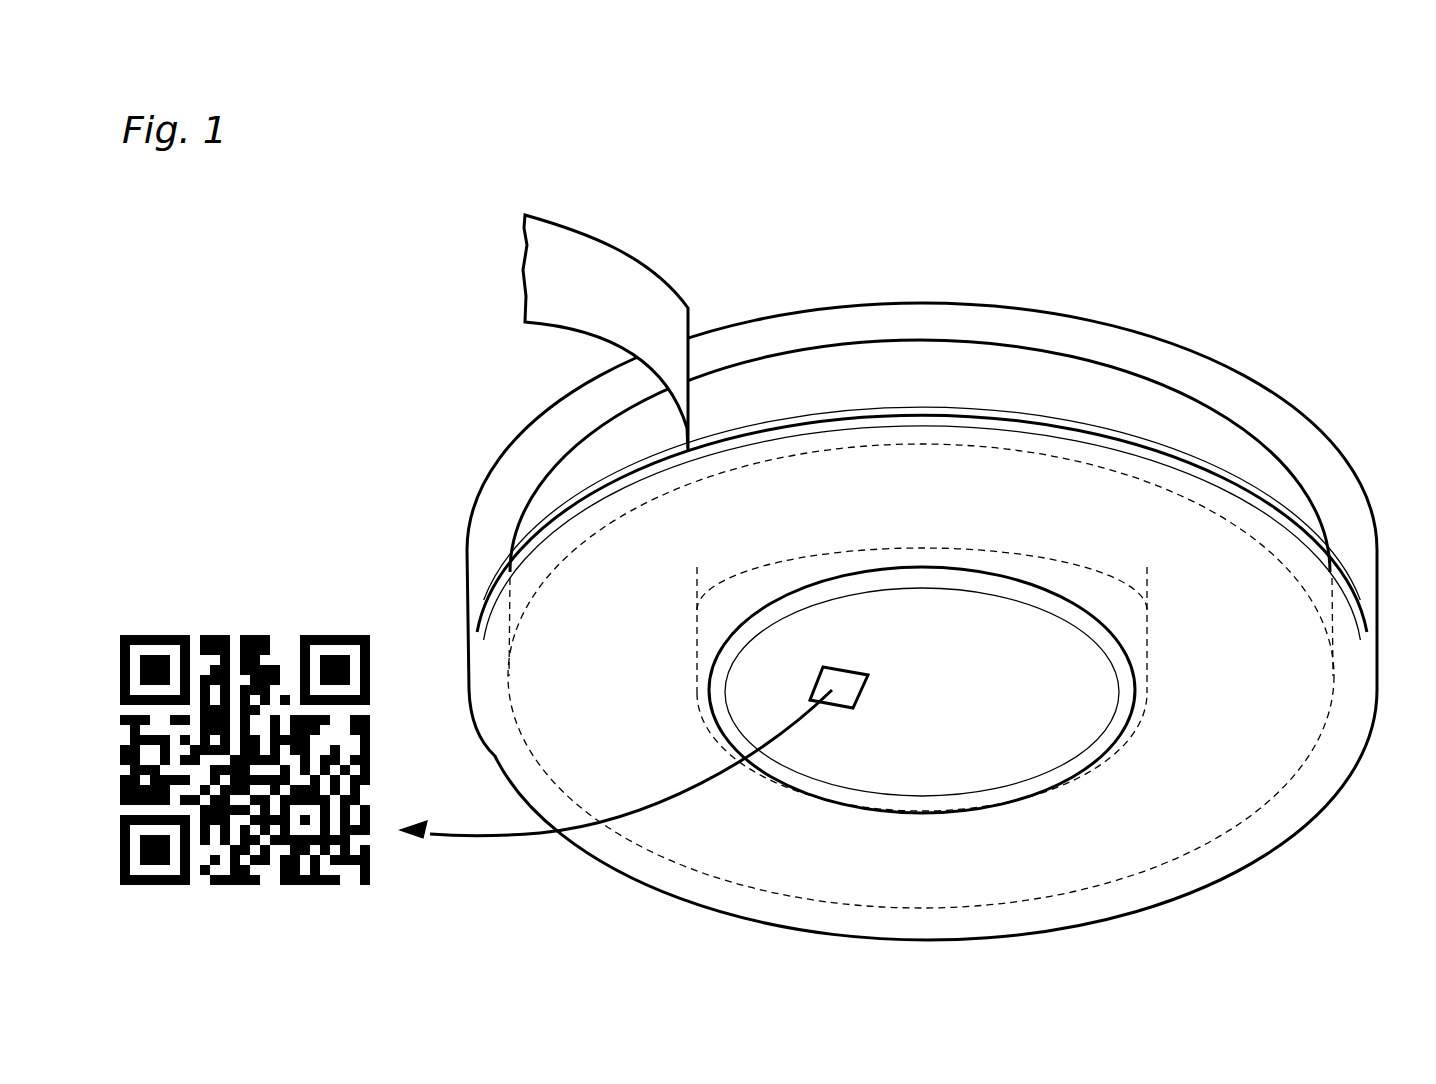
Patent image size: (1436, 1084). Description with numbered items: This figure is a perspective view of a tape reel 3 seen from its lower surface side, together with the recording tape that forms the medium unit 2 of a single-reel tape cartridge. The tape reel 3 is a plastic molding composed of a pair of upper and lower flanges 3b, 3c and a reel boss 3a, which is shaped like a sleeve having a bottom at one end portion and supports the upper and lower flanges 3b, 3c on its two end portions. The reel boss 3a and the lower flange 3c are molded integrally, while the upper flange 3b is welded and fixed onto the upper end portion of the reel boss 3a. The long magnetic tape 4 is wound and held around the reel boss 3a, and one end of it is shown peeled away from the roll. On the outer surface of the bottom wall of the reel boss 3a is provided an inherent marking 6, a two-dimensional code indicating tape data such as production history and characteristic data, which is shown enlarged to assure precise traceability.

The medium unit 2 is at (840, 206).
The tape reel 3 is at (862, 303).
The reel boss 3a is at (1152, 590).
The upper flange 3b is at (1098, 328).
The lower flange 3c is at (1260, 520).
The magnetic tape 4 is at (673, 302).
The inherent marking 6 is at (842, 692).